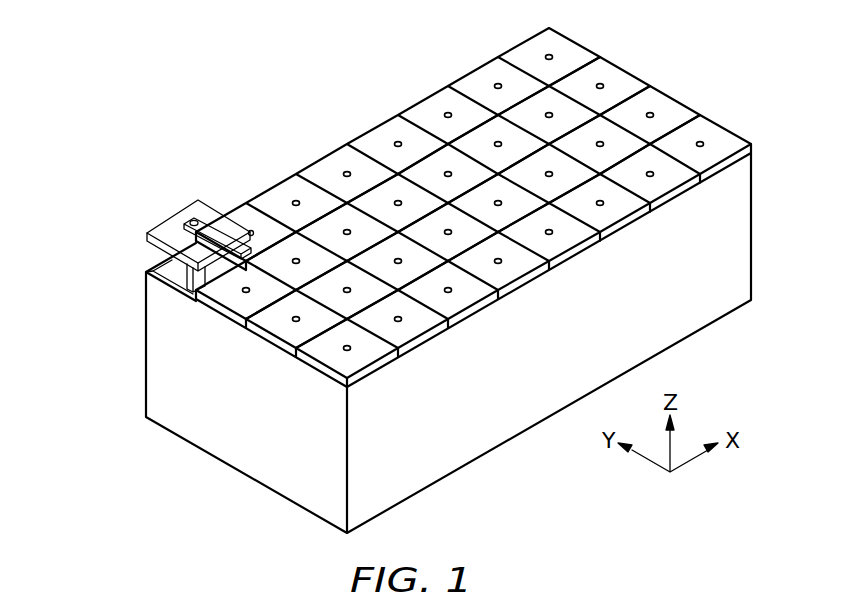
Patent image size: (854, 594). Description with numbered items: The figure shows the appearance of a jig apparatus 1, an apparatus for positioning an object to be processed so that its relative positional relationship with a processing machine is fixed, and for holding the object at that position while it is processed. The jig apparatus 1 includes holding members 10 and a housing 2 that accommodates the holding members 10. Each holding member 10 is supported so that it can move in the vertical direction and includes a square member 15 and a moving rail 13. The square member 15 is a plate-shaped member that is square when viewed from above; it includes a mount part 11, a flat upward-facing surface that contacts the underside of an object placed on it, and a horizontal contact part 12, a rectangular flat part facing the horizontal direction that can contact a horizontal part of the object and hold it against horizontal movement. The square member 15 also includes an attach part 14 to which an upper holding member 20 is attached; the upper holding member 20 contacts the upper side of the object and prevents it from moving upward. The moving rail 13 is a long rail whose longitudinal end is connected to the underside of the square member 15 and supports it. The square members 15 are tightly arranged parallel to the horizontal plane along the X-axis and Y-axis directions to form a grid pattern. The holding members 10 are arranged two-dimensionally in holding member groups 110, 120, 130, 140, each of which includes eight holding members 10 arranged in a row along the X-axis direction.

The jig apparatus 1 is at (402, 272).
The housing 2 is at (155, 349).
The holding member 10 is at (70, 172).
The mount part 11 is at (177, 213).
The horizontal contact part 12 is at (146, 234).
The moving rail 13 is at (150, 273).
The attach part 14 is at (496, 84).
The square member 15 is at (107, 172).
The upper holding member 20 is at (206, 220).
The holding member group 110 is at (549, 19).
The holding member group 120 is at (652, 84).
The holding member group 130 is at (650, 77).
The holding member group 140 is at (700, 106).